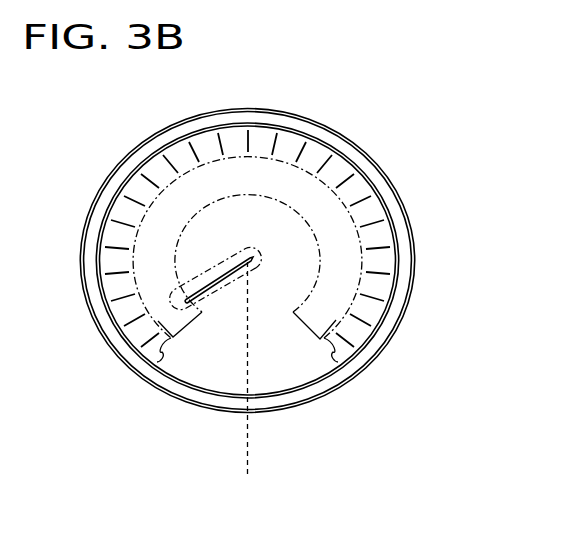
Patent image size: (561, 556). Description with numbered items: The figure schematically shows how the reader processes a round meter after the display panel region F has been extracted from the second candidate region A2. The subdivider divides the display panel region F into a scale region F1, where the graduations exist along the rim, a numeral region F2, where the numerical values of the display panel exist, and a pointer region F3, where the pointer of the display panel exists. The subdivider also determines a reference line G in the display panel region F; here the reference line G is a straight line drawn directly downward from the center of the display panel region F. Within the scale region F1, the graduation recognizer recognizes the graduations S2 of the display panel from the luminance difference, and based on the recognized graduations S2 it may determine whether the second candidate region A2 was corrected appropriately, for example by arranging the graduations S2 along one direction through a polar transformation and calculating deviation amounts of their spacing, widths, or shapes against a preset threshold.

The second candidate region A2 is at (335, 95).
The display panel region F is at (382, 175).
The graduations S2 is at (246, 141).
The scale region F1 is at (157, 350).
The numeral region F2 is at (197, 332).
The pointer region F3 is at (205, 313).
The reference line G is at (248, 453).